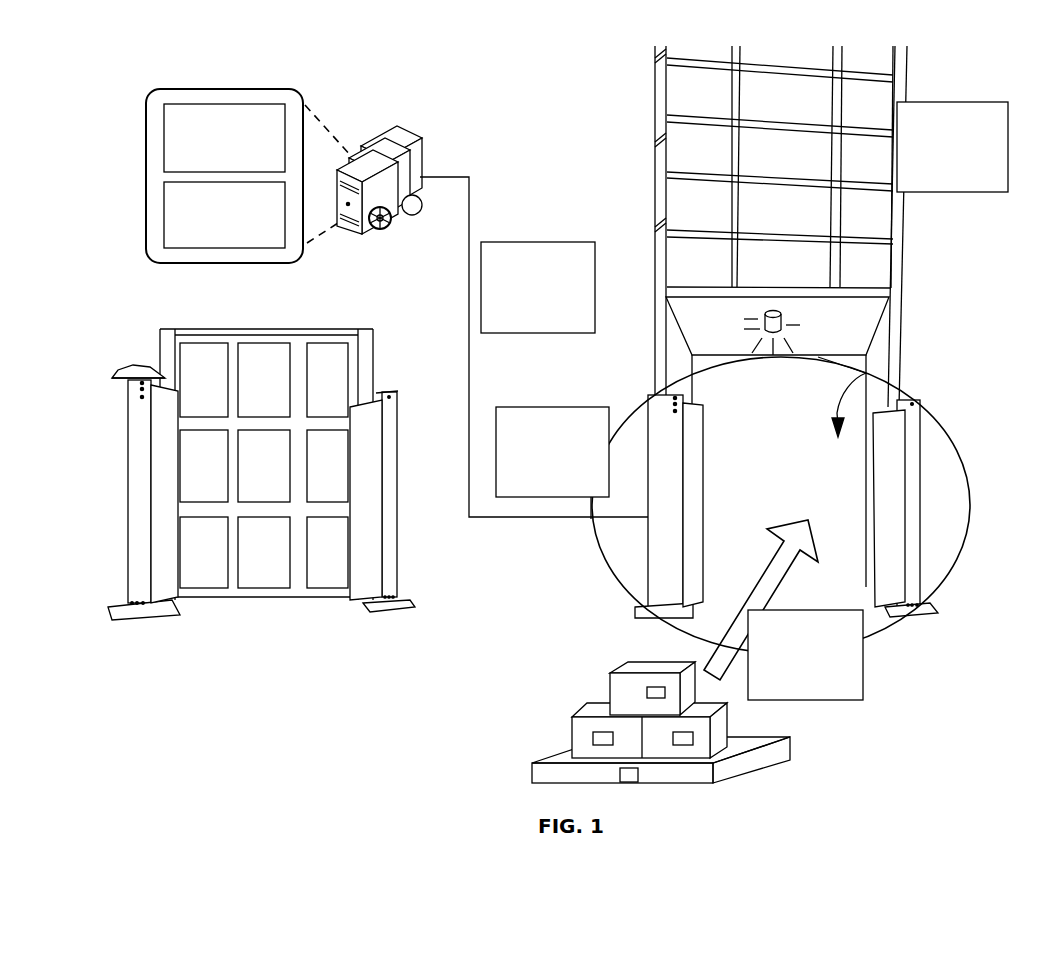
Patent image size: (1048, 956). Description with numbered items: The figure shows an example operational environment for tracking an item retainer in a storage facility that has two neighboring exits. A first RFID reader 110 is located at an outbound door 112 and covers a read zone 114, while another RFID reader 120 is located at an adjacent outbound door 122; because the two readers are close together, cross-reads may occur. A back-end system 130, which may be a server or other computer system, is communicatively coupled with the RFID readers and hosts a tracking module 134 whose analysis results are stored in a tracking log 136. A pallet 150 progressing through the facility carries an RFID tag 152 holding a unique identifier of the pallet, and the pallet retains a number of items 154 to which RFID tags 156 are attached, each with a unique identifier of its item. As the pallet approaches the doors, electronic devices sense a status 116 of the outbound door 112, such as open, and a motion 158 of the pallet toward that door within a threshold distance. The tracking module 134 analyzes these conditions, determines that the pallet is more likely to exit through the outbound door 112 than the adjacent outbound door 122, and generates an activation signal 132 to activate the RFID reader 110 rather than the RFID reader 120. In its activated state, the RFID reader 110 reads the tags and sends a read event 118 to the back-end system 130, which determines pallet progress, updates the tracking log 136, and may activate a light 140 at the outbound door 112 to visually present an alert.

The first RFID reader 110 is at (930, 606).
The outbound door 112 is at (866, 373).
The read zone 114 is at (958, 463).
The status 116 is at (831, 316).
The read event 118 is at (552, 463).
The RFID reader 120 is at (142, 600).
The adjacent outbound door 122 is at (264, 550).
The back-end system 130 is at (433, 160).
The activation signal 132 is at (534, 347).
The tracking module 134 is at (224, 138).
The tracking log 136 is at (224, 215).
The light 140 is at (797, 318).
The pallet 150 is at (738, 763).
The RFID tag 152 is at (620, 782).
The items 154 is at (626, 687).
The RFID tags 156 is at (655, 686).
The motion 158 is at (783, 610).